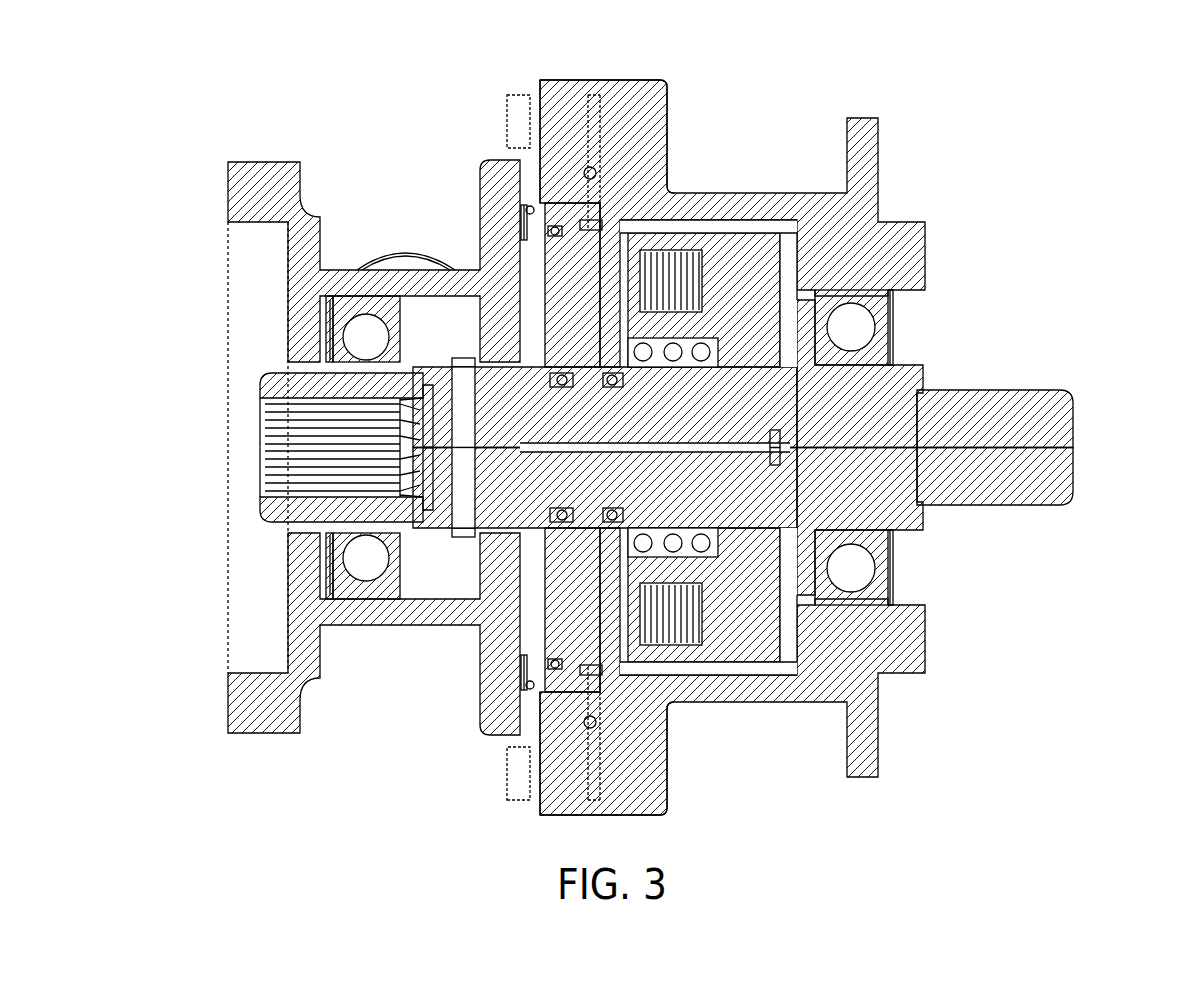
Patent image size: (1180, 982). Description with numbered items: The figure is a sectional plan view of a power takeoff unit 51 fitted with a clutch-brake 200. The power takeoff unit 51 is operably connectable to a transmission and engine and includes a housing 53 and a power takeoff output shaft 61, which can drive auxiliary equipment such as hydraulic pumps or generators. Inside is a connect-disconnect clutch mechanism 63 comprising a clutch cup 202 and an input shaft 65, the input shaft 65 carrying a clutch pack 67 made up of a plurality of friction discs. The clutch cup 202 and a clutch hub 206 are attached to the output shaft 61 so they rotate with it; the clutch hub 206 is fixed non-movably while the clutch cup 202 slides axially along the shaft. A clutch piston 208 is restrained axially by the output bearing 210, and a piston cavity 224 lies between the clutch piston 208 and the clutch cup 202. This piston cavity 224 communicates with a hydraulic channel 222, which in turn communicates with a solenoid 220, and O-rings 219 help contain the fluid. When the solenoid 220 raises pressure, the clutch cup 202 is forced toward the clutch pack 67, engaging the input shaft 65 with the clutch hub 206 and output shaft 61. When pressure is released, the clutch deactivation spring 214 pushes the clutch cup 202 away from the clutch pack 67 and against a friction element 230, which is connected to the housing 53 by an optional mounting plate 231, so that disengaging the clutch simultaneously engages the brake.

The clutch-brake 200 is at (430, 109).
The clutch cup 202 is at (600, 210).
The clutch hub 206 is at (748, 300).
The clutch piston 208 is at (553, 312).
The output bearing 210 is at (325, 358).
The clutch deactivation spring 214 is at (705, 343).
The O-rings 219 is at (550, 231).
The solenoid 220 is at (378, 250).
The hydraulic channel 222 is at (464, 355).
The piston cavity 224 is at (585, 226).
The friction element 230 is at (532, 210).
The plate 231 is at (524, 236).
The power takeoff unit 51 is at (992, 168).
The housing 53 is at (300, 176).
The power takeoff output shaft 61 is at (270, 458).
The connect-disconnect clutch mechanism 63 is at (681, 176).
The input shaft 65 is at (780, 247).
The clutch pack 67 is at (682, 247).